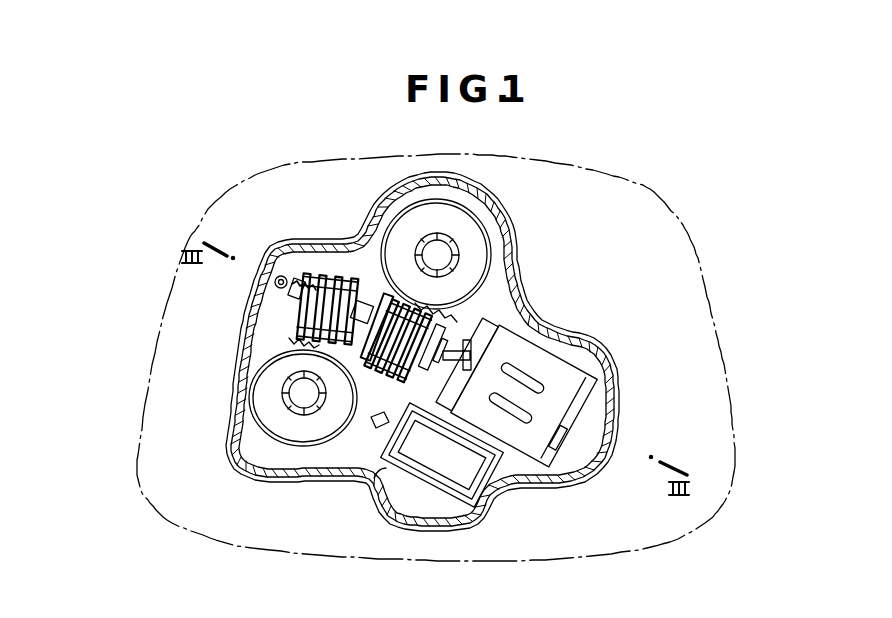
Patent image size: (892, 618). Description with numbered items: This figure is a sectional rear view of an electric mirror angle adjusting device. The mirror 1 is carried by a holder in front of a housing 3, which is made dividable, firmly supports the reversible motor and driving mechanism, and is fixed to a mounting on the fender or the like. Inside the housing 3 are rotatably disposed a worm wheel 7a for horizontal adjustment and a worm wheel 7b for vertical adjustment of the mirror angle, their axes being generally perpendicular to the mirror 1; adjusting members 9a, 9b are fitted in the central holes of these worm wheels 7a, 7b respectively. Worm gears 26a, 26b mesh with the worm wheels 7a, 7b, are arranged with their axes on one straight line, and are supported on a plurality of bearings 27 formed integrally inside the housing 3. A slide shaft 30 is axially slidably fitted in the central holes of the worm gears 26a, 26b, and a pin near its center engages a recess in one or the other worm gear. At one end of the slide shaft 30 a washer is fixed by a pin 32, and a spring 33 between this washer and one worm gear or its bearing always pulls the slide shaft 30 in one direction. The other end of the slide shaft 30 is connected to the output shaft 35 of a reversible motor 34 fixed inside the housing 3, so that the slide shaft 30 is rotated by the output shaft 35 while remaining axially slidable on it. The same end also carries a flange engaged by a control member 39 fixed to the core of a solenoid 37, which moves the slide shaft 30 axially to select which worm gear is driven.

The mirror 1 is at (706, 300).
The housing 3 is at (514, 262).
The worm wheel 7a is at (262, 404).
The worm wheel 7b is at (462, 221).
The adjusting member 9a is at (303, 403).
The adjusting member 9b is at (441, 252).
The worm gear 26a is at (346, 290).
The worm gear 26b is at (392, 370).
The bearings 27 is at (337, 358).
The slide shaft 30 is at (293, 290).
The pin 32 is at (280, 268).
The spring 33 is at (313, 283).
The reversible motor 34 is at (586, 381).
The output shaft 35 is at (451, 357).
The solenoid 37 is at (467, 488).
The control member 39 is at (366, 480).